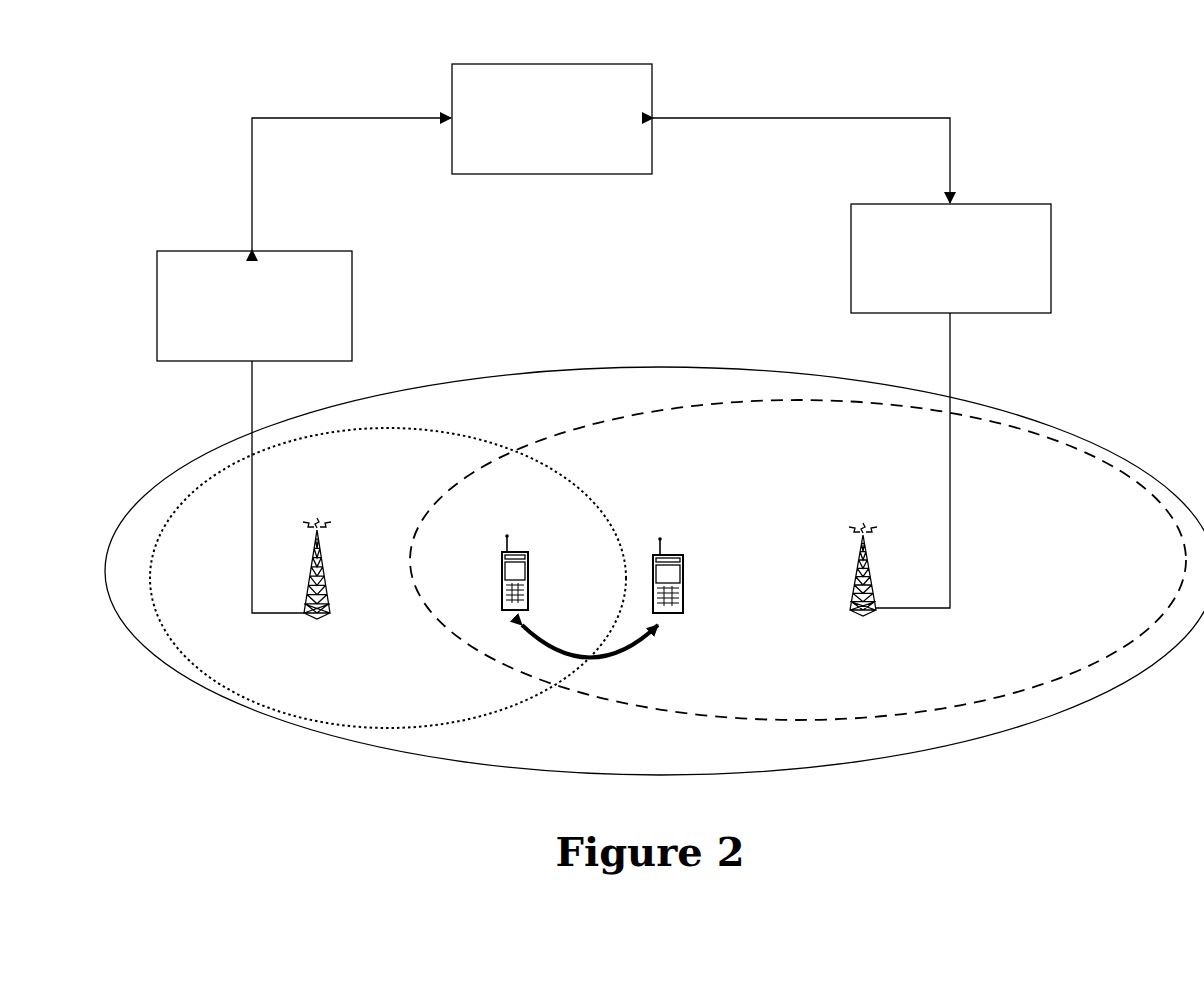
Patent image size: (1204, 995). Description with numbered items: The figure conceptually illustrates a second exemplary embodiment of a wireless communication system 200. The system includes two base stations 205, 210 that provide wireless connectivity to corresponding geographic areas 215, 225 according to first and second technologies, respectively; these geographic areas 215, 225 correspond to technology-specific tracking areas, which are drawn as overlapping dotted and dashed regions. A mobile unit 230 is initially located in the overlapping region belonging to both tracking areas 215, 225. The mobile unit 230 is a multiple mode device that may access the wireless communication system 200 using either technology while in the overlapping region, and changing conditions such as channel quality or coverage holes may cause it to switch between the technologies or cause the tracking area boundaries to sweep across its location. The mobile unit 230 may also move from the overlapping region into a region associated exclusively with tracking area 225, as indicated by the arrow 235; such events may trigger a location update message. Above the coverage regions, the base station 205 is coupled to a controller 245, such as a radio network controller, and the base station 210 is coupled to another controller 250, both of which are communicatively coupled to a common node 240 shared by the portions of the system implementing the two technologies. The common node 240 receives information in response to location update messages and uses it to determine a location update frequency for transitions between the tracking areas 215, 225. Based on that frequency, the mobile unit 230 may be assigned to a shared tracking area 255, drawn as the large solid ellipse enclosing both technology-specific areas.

The wireless communication system 200 is at (1014, 75).
The base station 205 is at (318, 619).
The base station 210 is at (866, 616).
The geographic area 215 is at (373, 727).
The geographic area 225 is at (689, 720).
The mobile unit 230 is at (530, 578).
The arrow 235 is at (598, 657).
The common node 240 is at (552, 119).
The controller 245 is at (254, 306).
The controller 250 is at (951, 258).
The shared tracking area 255 is at (635, 367).